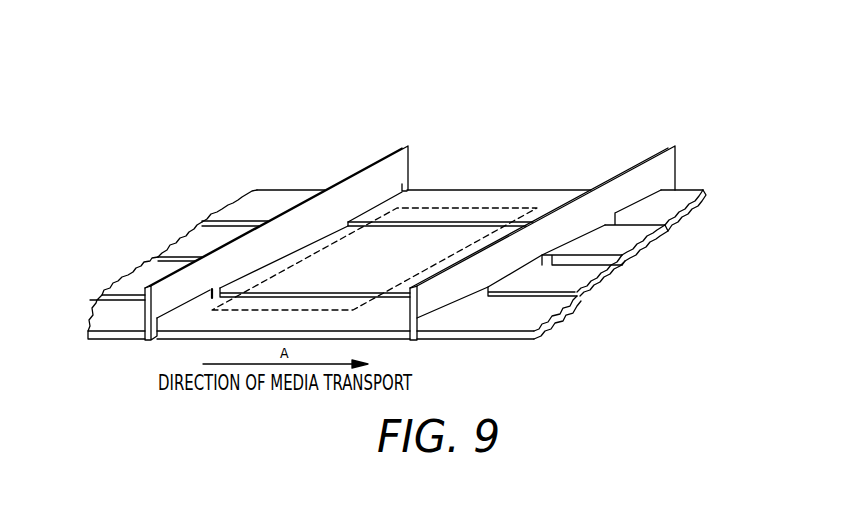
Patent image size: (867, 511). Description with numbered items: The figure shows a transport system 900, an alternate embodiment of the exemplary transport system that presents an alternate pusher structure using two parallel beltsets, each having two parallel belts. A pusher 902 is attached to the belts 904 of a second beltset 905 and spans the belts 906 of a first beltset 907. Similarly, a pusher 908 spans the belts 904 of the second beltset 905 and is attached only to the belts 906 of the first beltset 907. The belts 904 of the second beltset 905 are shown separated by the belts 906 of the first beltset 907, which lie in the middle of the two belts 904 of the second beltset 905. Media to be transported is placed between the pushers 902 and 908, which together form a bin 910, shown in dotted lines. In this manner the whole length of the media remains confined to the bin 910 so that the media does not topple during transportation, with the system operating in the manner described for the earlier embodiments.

The transport system 900 is at (503, 97).
The pusher 902 is at (408, 146).
The belts 904 is at (663, 206).
The second beltset 905 is at (681, 248).
The belts 906 is at (192, 237).
The first beltset 907 is at (117, 229).
The pusher 908 is at (673, 145).
The bin 910 is at (470, 207).